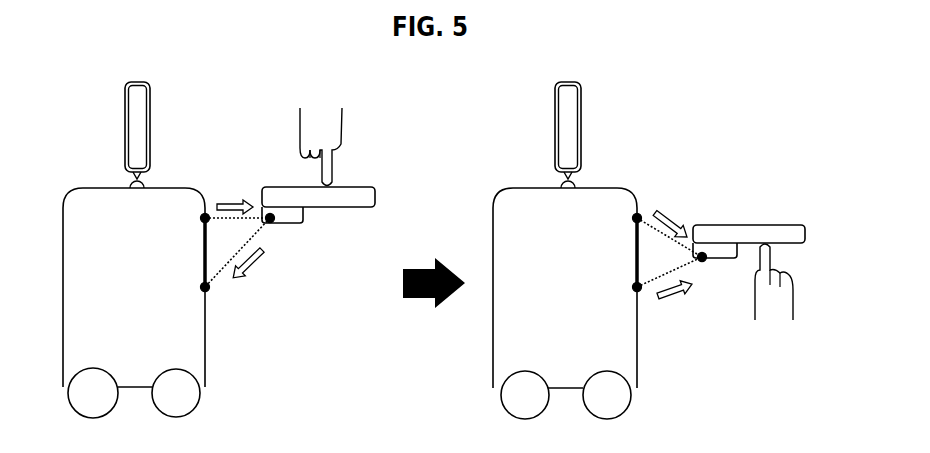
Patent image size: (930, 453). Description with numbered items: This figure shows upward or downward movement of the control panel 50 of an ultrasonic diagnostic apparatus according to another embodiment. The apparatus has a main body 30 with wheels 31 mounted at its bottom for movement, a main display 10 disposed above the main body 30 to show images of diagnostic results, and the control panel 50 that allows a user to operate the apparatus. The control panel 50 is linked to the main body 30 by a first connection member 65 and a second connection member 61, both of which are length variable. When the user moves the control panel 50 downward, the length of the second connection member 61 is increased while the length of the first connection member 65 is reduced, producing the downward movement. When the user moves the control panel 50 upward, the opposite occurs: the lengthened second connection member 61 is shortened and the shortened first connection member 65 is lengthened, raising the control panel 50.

The main display 10 is at (130, 121).
The main body 30 is at (197, 330).
The wheels 31 is at (190, 395).
The control panel 50 is at (380, 182).
The second connection member 61 is at (232, 215).
The first connection member 65 is at (258, 232).